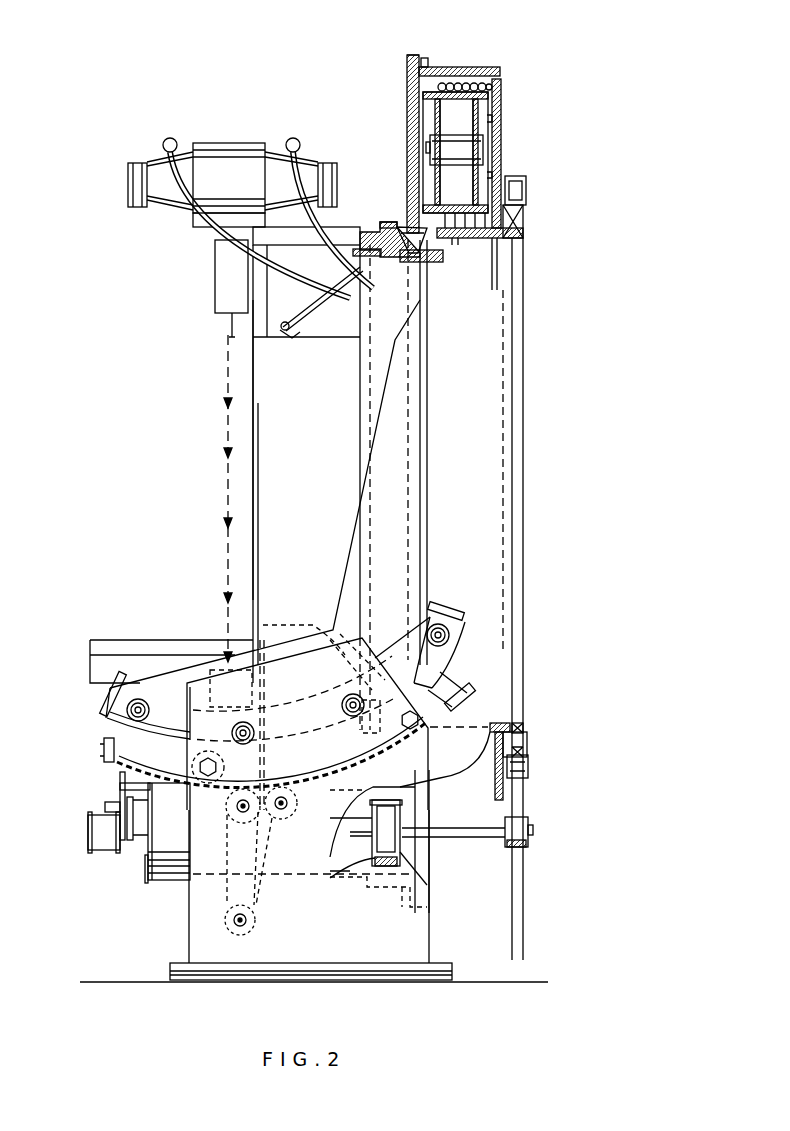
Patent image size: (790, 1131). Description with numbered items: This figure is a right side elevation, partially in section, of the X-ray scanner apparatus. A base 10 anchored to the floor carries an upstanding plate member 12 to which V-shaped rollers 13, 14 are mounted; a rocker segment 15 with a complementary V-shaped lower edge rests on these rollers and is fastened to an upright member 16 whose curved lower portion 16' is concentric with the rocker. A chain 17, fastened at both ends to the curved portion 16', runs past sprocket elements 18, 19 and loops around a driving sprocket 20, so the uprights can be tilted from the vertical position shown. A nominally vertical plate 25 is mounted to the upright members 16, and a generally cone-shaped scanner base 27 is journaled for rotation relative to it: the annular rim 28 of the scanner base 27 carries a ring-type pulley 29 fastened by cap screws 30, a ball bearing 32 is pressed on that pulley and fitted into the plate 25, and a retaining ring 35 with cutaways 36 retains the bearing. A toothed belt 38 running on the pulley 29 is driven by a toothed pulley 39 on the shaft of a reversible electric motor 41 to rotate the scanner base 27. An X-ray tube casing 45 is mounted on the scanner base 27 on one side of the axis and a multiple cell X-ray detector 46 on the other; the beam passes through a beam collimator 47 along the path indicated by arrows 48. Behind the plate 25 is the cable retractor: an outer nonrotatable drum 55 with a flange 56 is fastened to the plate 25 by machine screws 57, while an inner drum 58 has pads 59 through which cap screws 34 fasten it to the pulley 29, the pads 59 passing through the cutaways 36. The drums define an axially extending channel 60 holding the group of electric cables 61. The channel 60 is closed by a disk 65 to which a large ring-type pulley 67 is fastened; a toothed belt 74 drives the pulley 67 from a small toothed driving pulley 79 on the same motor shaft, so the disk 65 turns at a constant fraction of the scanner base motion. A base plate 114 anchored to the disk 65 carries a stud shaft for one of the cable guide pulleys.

The base 10 is at (450, 966).
The plate member 12 is at (203, 937).
The V-shaped roller 13 is at (213, 752).
The V-shaped roller 14 is at (453, 680).
The rocker segment 15 is at (120, 708).
The upright member 16 is at (265, 494).
The curved lower portion 16' is at (220, 752).
The chain 17 is at (125, 773).
The sprocket 18 is at (237, 810).
The sprocket 19 is at (297, 808).
The driving sprocket 20 is at (258, 933).
The vertical plate 25 is at (407, 88).
The scanner base 27 is at (298, 364).
The annular rim 28 is at (378, 215).
The annular member (pulley) 29 is at (415, 292).
The cap screw 30 is at (357, 253).
The ball bearing 32 is at (401, 216).
The cap screw 34 is at (483, 241).
The retaining ring 35 is at (430, 229).
The cutaway 36 is at (437, 262).
The toothed belt 38 is at (363, 224).
The toothed pulley 39 is at (370, 857).
The reversible electric motor 41 is at (168, 850).
The X-ray tube casing 45 is at (222, 150).
The multiple cell X-ray detector 46 is at (227, 700).
The beam collimator 47 is at (225, 282).
The arrows (beam path) 48 is at (228, 440).
The outer drum 55 is at (475, 64).
The flange 56 is at (413, 54).
The machine screw 57 is at (427, 58).
The inner drum 58 is at (458, 245).
The pad 59 is at (427, 268).
The channel 60 is at (500, 76).
The electric cables 61 is at (482, 79).
The disk 65 is at (500, 132).
The ring-type pulley 67 is at (530, 193).
The toothed belt 74 is at (516, 180).
The driving pulley 79 is at (535, 829).
The base plate 114 is at (487, 143).